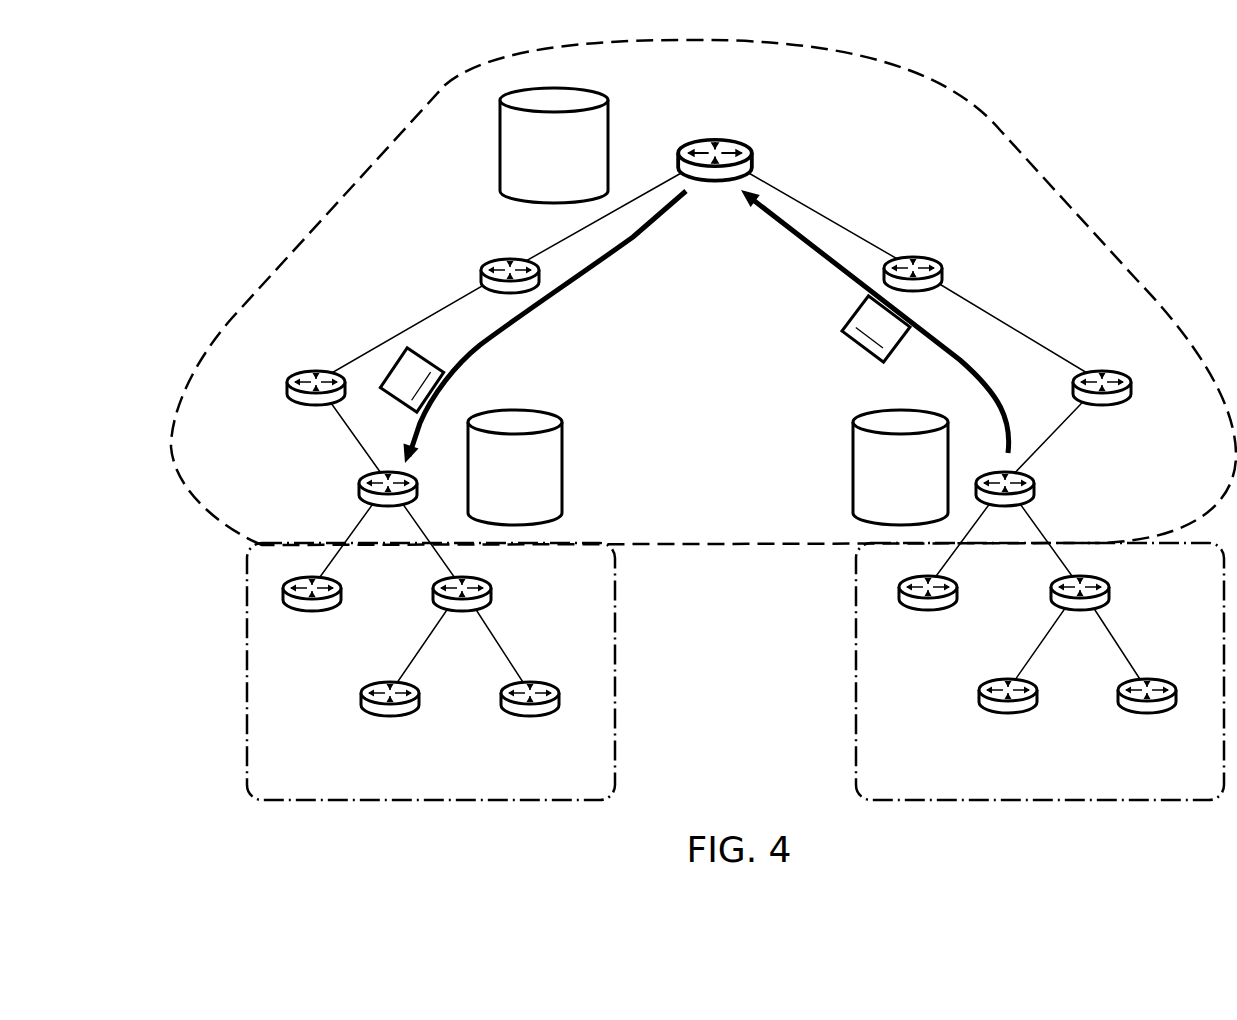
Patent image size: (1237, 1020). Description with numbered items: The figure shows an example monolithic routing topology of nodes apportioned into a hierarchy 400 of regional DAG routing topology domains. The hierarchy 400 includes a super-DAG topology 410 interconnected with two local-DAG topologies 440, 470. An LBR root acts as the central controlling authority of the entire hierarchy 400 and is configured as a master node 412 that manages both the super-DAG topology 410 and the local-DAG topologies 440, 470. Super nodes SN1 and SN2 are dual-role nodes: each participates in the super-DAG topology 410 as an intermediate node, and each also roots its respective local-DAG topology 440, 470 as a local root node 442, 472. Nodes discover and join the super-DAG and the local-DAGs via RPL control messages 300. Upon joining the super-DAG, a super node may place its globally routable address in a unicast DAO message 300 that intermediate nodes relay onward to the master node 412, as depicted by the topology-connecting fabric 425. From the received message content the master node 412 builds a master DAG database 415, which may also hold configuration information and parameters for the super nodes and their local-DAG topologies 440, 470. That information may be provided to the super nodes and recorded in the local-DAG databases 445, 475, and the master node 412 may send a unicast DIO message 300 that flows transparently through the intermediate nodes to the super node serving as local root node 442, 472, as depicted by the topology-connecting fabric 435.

The RPL control message 300 is at (645, 354).
The hierarchy of regional DAG routing topology domains 400 is at (703, 292).
The super-DAG topology 410 is at (1130, 98).
The master node 412 is at (710, 136).
The master DAG database 415 is at (500, 148).
The topology-connecting fabric 425 is at (825, 262).
The topology-connecting fabric 435 is at (578, 277).
The local-DAG topology 440 is at (440, 790).
The local root node 442 is at (358, 480).
The local-DAG database 445 is at (564, 476).
The local-DAG topology 470 is at (1015, 790).
The local root node 472 is at (1036, 480).
The local-DAG database 475 is at (852, 477).